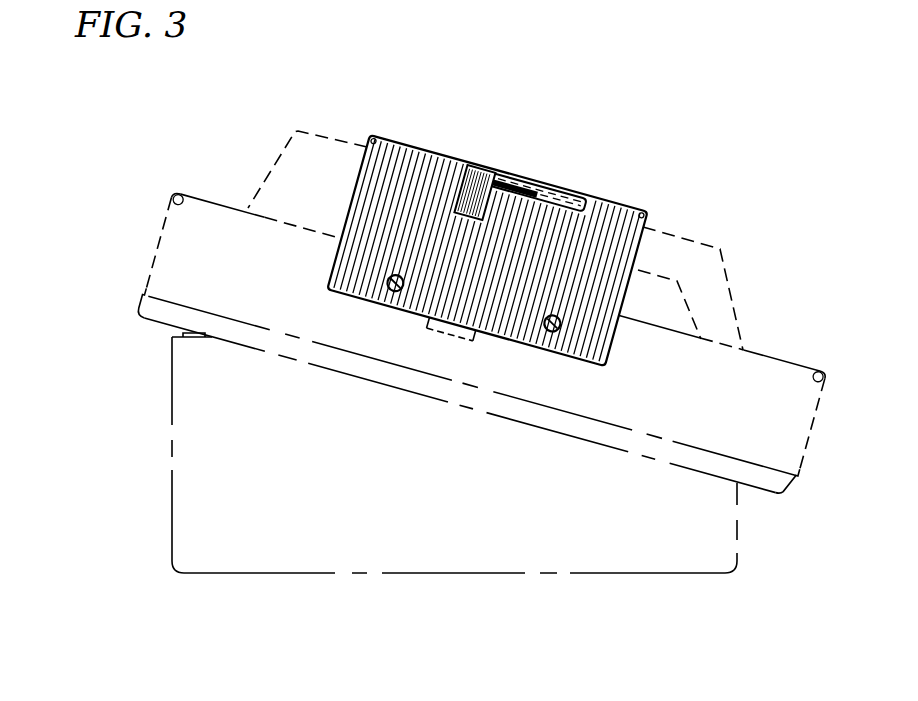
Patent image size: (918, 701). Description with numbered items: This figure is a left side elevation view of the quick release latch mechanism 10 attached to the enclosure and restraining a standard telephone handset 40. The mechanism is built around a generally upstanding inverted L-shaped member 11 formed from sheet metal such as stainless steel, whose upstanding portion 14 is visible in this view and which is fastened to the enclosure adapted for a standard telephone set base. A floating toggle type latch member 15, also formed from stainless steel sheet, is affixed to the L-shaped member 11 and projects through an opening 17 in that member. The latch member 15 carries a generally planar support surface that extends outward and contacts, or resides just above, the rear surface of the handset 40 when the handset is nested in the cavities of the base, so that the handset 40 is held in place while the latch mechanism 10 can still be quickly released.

The quick release latch mechanism 10 is at (489, 160).
The inverted L-shaped member 11 is at (617, 203).
The upstanding portion 14 is at (403, 150).
The floating toggle type latch member 15 is at (527, 187).
The opening 17 is at (566, 213).
The telephone handset 40 is at (718, 291).